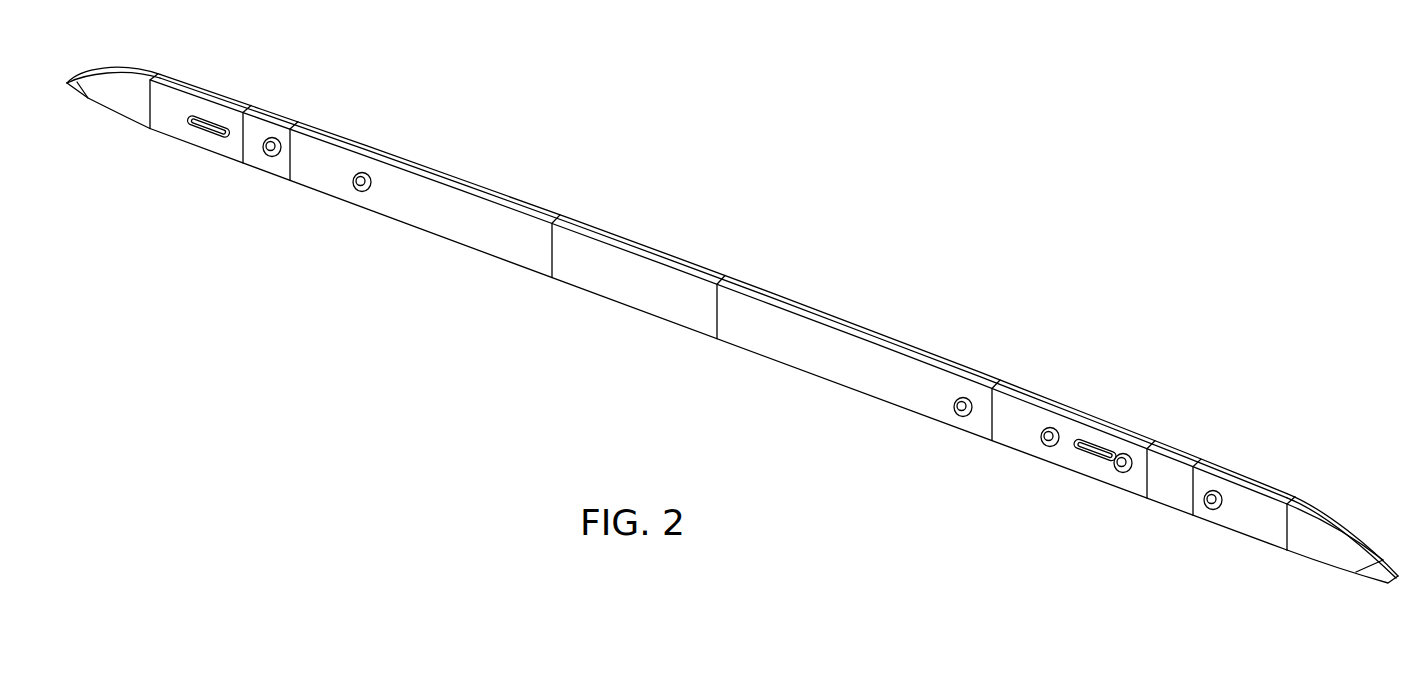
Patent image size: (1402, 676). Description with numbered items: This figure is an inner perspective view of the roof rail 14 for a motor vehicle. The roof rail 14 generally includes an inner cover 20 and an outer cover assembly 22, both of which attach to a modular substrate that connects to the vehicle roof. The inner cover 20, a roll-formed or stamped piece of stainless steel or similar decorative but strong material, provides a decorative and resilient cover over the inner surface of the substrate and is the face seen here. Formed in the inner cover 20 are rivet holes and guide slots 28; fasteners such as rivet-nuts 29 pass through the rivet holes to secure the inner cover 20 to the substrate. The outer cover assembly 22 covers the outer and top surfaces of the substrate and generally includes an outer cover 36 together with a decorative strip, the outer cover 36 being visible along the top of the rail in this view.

The roof rail 14 is at (1038, 86).
The inner cover 20 is at (846, 367).
The outer cover assembly 22 is at (1313, 498).
The guide slots 28 is at (207, 128).
The rivet-nuts 29 is at (355, 184).
The outer cover 36 is at (1018, 390).